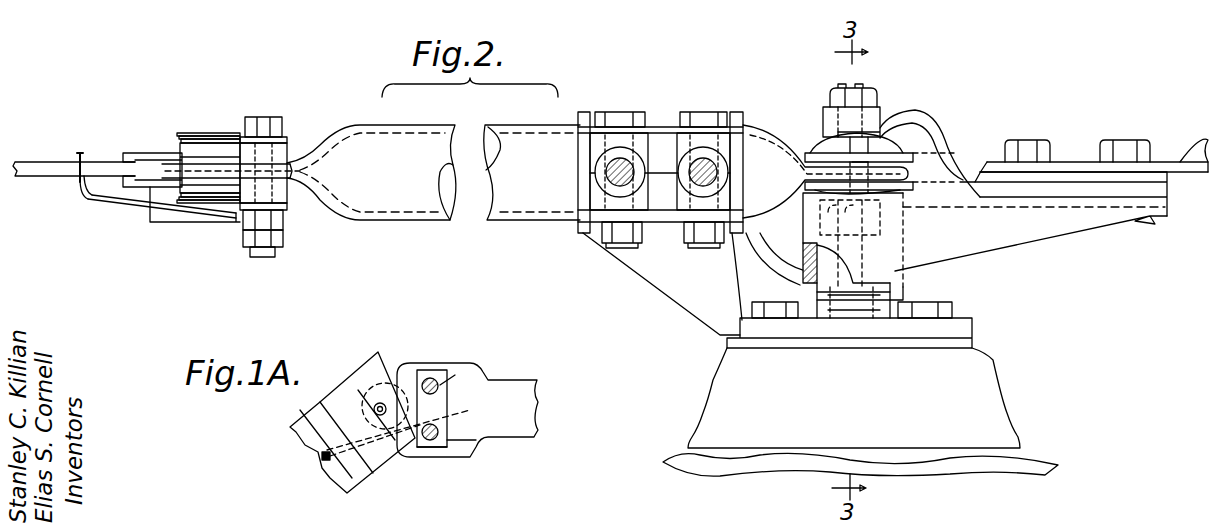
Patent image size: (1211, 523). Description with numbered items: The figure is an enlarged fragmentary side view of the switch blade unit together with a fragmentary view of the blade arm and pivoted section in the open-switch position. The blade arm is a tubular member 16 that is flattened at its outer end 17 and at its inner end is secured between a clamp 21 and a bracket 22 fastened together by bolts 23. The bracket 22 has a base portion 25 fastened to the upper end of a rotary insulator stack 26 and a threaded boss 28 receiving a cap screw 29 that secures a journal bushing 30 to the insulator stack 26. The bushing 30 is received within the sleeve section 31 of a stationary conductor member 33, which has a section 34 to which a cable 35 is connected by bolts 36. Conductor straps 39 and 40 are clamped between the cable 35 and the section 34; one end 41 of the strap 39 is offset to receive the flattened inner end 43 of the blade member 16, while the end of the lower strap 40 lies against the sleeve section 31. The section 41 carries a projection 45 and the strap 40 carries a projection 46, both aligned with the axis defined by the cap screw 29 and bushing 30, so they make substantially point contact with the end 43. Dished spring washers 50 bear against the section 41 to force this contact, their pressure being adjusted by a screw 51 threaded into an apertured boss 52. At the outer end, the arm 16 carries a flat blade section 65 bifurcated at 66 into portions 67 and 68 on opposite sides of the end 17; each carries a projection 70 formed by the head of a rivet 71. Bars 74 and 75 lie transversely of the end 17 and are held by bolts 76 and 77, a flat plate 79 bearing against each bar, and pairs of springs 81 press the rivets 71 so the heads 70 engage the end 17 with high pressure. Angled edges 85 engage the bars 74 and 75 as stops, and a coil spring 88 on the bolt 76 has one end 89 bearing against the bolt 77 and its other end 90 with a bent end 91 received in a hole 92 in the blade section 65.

In FIG. 2, the tubular member 16 is at (490, 222).
In FIG. 1A, the tubular member 16 is at (512, 445).
In FIG. 2, the flattened outer end 17 is at (294, 171).
In FIG. 1A, the flattened outer end 17 is at (440, 455).
In FIG. 2, the clamp 21 is at (660, 113).
In FIG. 2, the bracket 22 is at (682, 305).
In FIG. 2, the bolts 23 is at (700, 182).
In FIG. 2, the base portion 25 is at (945, 325).
In FIG. 2, the rotary insulator stack 26 is at (992, 376).
In FIG. 2, the threaded boss 28 is at (895, 300).
In FIG. 2, the cap screw 29 is at (888, 236).
In FIG. 2, the journal bushing 30 is at (802, 258).
In FIG. 2, the sleeve section 31 is at (798, 218).
In FIG. 2, the stationary conductor member 33 is at (987, 167).
In FIG. 2, the section 34 is at (1145, 220).
In FIG. 2, the cable 35 is at (1190, 158).
In FIG. 2, the bolts 36 is at (1030, 150).
In FIG. 2, the conductor strap 39 is at (995, 160).
In FIG. 2, the conductor strap 40 is at (1000, 190).
In FIG. 2, the offset end 41 is at (905, 145).
In FIG. 2, the flattened inner end 43 is at (790, 165).
In FIG. 2, the projection 45 is at (872, 150).
In FIG. 2, the projection 46 is at (880, 185).
In FIG. 2, the dished spring washers 50 is at (818, 150).
In FIG. 2, the screw 51 is at (858, 85).
In FIG. 2, the apertured boss 52 is at (830, 117).
In FIG. 2, the flat blade section 65 is at (56, 160).
In FIG. 1A, the flat blade section 65 is at (305, 432).
In FIG. 2, the bifurcation 66 is at (135, 154).
In FIG. 2, the portion 67 is at (152, 190).
In FIG. 2, the portion 68 is at (182, 143).
In FIG. 1A, the portion 68 is at (352, 388).
In FIG. 2, the projection 70 is at (215, 136).
In FIG. 1A, the projection 70 is at (393, 372).
In FIG. 2, the rivet 71 is at (200, 138).
In FIG. 2, the bar 74 is at (288, 163).
In FIG. 1A, the bar 74 is at (437, 385).
In FIG. 2, the bar 75 is at (284, 214).
In FIG. 2, the bolt 76 is at (266, 257).
In FIG. 1A, the bolt 76 is at (452, 380).
In FIG. 2, the bolt 77 is at (275, 117).
In FIG. 1A, the bolt 77 is at (470, 452).
In FIG. 2, the flat plate 79 is at (255, 137).
In FIG. 2, the springs 81 is at (226, 133).
In FIG. 1A, the angled edge 85 is at (422, 378).
In FIG. 2, the coil spring 88 is at (284, 238).
In FIG. 1A, the spring end 89 is at (456, 414).
In FIG. 2, the spring end 90 is at (110, 203).
In FIG. 1A, the spring end 90 is at (382, 458).
In FIG. 2, the bent end 91 is at (80, 153).
In FIG. 1A, the bent end 91 is at (325, 462).
In FIG. 2, the hole 92 is at (78, 182).
In FIG. 1A, the hole 92 is at (320, 460).